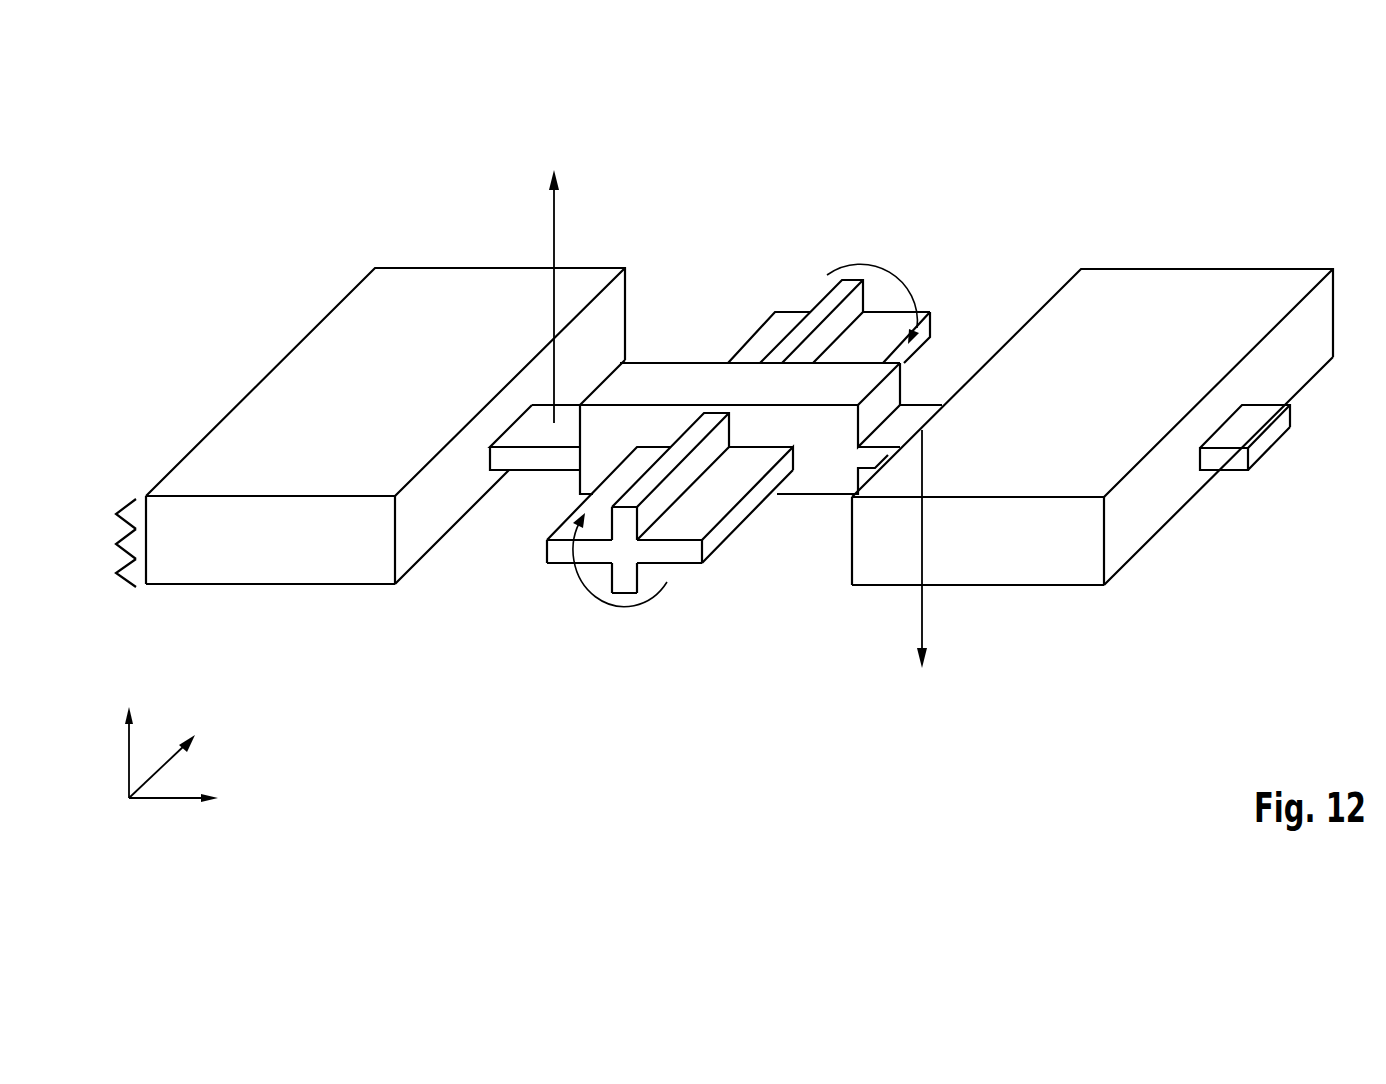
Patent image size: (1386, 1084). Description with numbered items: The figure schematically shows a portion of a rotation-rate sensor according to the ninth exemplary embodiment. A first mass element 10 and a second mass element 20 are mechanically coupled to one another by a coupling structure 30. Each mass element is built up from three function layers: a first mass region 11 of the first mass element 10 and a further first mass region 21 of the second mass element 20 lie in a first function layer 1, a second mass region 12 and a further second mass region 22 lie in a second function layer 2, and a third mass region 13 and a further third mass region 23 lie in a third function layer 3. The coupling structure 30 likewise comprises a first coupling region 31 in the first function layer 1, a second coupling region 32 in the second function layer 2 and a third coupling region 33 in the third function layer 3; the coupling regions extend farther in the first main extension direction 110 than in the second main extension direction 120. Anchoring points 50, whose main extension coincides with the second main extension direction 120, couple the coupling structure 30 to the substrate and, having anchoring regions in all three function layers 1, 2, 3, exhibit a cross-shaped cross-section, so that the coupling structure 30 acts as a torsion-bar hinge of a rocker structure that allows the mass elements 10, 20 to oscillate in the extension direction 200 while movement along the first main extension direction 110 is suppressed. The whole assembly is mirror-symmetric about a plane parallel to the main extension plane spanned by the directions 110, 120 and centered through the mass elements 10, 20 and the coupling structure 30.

The first mass element 10 is at (364, 424).
The first mass region 11 is at (219, 545).
The second mass region 12 is at (284, 517).
The third mass region 13 is at (175, 578).
The first function layer 1 is at (119, 544).
The second function layer 2 is at (119, 514).
The third function layer 3 is at (119, 571).
The second mass element 20 is at (1092, 422).
The further first mass region 21 is at (1023, 539).
The further second mass region 22 is at (1077, 510).
The further third mass region 23 is at (978, 573).
The coupling structure 30 is at (716, 425).
The first coupling region 31 is at (537, 467).
The second coupling region 32 is at (810, 432).
The third coupling region 33 is at (835, 482).
The anchoring points 50 is at (813, 318).
The first main extension direction 110 is at (226, 813).
The second main extension direction 120 is at (220, 729).
The extension direction 200 is at (109, 703).